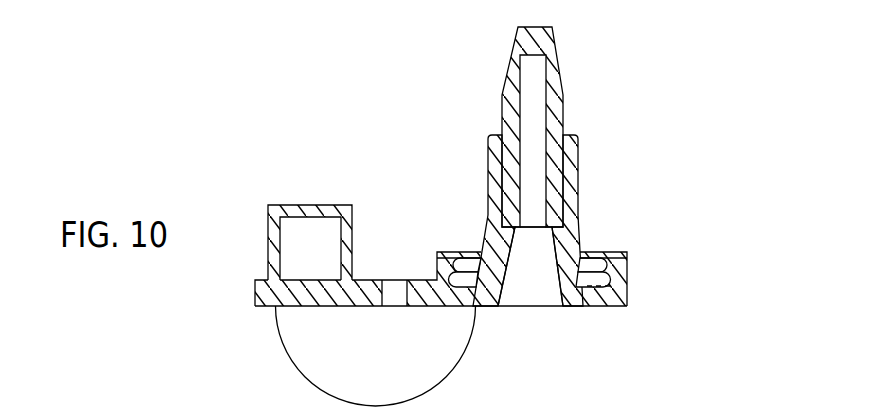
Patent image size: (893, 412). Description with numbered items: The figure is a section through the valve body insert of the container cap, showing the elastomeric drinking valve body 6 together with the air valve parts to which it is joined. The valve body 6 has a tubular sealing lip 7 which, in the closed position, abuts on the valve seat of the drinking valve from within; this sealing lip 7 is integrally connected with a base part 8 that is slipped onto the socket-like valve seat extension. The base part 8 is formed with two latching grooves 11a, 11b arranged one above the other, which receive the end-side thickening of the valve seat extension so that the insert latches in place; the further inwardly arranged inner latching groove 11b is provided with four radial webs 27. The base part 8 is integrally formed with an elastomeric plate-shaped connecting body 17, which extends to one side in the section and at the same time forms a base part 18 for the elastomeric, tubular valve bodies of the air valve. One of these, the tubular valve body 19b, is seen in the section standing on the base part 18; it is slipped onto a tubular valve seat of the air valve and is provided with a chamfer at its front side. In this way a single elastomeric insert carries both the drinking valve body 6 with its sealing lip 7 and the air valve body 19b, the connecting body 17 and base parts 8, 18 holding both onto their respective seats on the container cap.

The valve body 6 is at (553, 102).
The tubular sealing lip 7 is at (573, 165).
The base part 8 is at (593, 302).
The latching groove 11a is at (628, 252).
The inner latching groove 11b is at (478, 305).
The plate-shaped connecting body 17 is at (551, 314).
The base part 18 is at (277, 318).
The tubular valve body 19b is at (347, 220).
The radial webs 27 is at (612, 278).